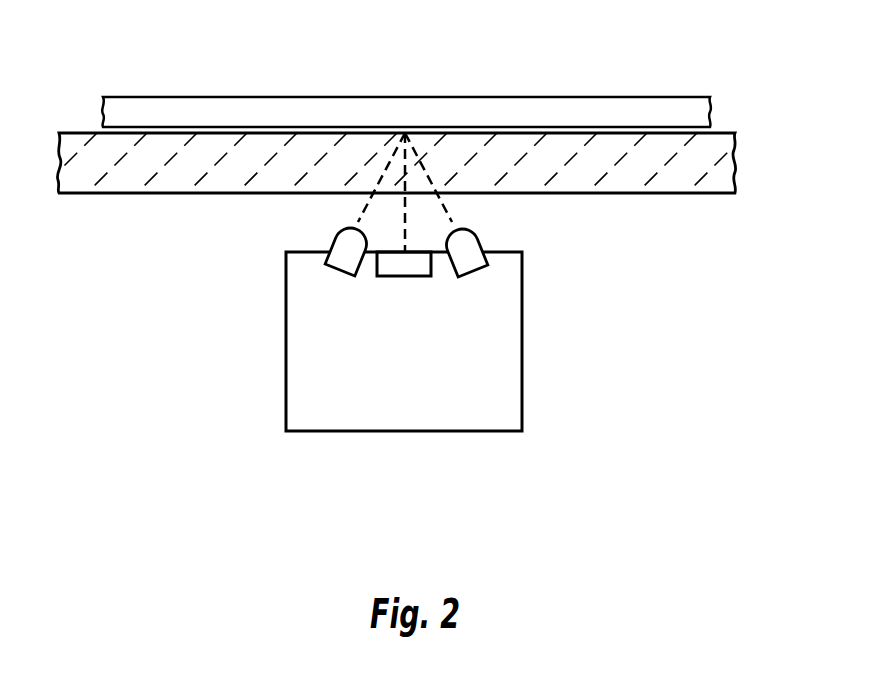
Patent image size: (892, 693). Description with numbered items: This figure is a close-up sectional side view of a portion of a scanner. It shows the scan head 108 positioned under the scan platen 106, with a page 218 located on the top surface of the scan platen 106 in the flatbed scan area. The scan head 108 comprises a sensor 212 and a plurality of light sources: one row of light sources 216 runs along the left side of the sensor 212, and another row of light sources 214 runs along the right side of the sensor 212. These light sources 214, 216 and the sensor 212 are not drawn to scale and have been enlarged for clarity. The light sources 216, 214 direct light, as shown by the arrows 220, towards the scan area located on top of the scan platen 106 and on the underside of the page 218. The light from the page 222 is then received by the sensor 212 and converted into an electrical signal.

The scan platen 106 is at (713, 157).
The scan head 108 is at (431, 403).
The sensor 212 is at (406, 278).
The light sources 214 is at (485, 270).
The light sources 216 is at (330, 266).
The page 218 is at (622, 107).
The arrows 220 is at (392, 153).
The light from the page 222 is at (410, 157).